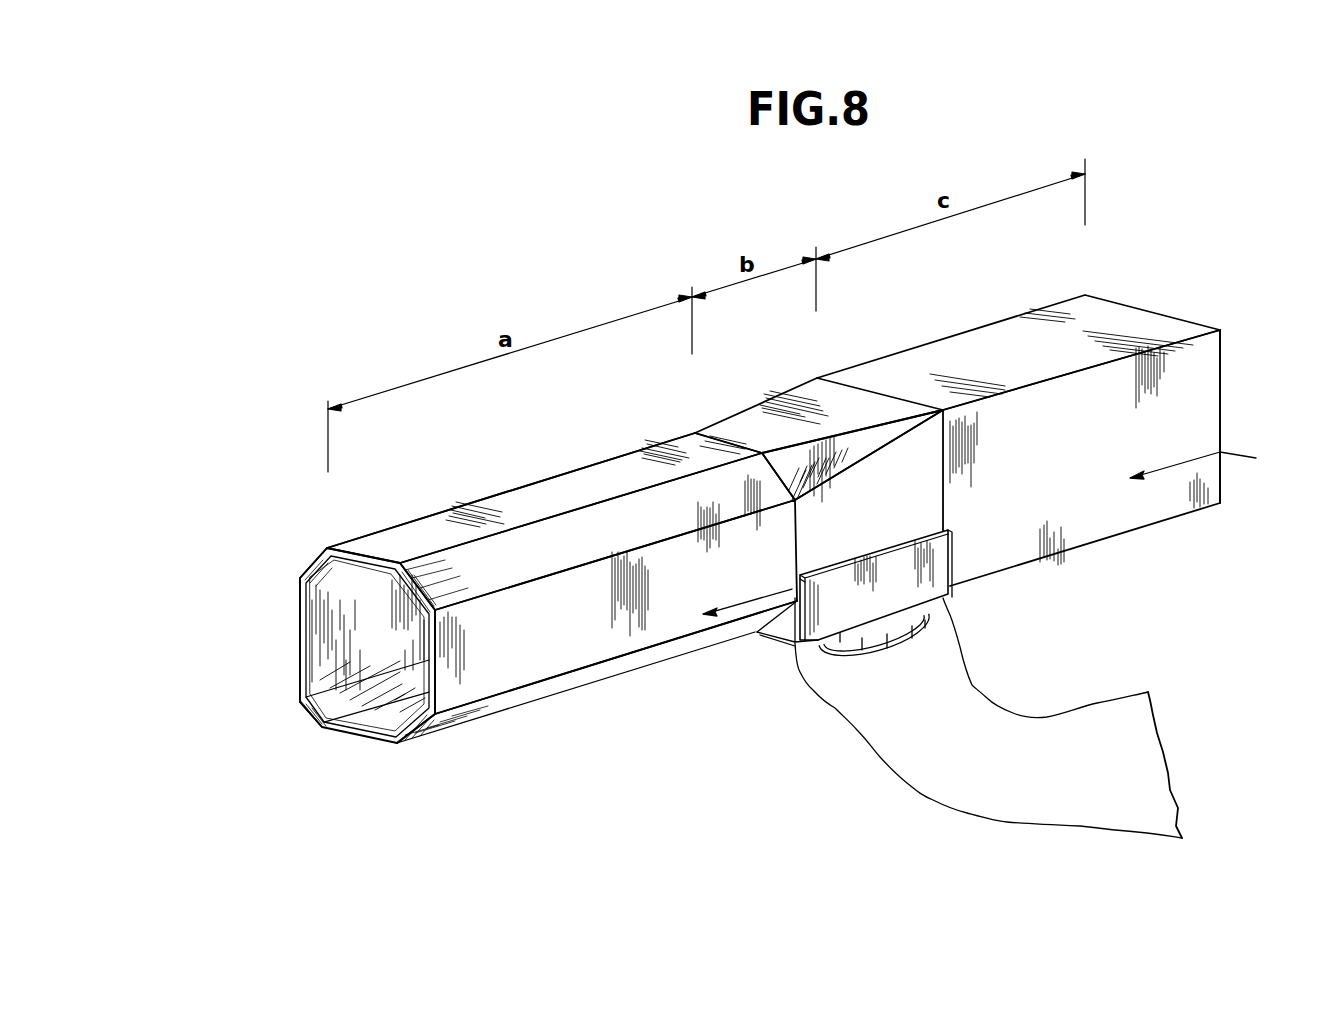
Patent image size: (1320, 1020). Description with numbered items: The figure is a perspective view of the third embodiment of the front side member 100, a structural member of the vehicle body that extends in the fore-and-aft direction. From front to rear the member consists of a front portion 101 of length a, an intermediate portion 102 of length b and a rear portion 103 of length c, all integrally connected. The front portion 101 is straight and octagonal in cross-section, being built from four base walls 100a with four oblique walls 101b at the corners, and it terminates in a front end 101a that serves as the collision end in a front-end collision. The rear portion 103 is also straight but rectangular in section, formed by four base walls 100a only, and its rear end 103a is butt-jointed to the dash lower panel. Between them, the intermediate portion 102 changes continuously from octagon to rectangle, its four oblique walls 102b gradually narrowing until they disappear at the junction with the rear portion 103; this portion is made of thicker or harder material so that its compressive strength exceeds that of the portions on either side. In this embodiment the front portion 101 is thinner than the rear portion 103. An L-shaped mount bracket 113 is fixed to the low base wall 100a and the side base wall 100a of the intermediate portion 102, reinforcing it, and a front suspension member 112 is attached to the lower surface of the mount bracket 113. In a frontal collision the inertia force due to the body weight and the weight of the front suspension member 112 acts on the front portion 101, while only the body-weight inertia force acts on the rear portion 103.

The front side member 100 is at (437, 746).
The base wall 100a is at (594, 467).
The front portion 101 is at (535, 492).
The front end 101a is at (300, 630).
The oblique wall 101b is at (545, 737).
The intermediate portion 102 is at (798, 410).
The oblique wall of the intermediate portion 102b is at (785, 465).
The rear portion 103 is at (961, 366).
The rear end 103a is at (1222, 400).
The front suspension member 112 is at (986, 701).
The mount bracket 113 is at (957, 596).